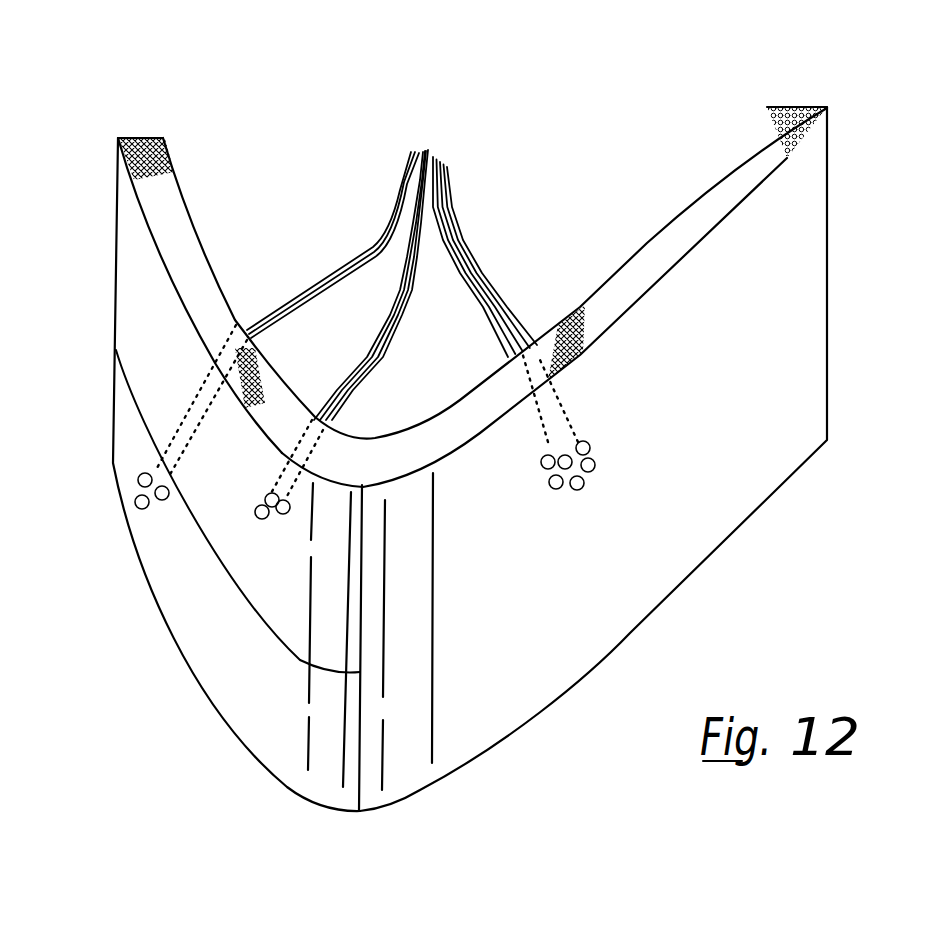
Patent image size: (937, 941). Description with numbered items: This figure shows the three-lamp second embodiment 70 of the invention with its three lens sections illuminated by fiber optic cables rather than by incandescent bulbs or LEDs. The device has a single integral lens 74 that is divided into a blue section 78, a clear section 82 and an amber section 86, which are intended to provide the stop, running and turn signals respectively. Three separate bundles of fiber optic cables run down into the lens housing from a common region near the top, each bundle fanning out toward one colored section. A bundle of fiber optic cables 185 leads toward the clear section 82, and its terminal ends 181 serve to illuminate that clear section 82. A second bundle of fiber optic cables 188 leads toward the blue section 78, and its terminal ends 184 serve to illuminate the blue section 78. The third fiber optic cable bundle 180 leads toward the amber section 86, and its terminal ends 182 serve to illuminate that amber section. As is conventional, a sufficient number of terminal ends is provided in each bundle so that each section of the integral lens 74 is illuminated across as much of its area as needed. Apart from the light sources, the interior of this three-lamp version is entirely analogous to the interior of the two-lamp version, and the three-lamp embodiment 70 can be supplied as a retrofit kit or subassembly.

The second embodiment 70 is at (272, 92).
The integral lens 74 is at (493, 214).
The blue section 78 is at (133, 267).
The clear section 82 is at (180, 608).
The amber section 86 is at (593, 570).
The fiber optic cable bundle 180 is at (497, 293).
The terminal ends 181 is at (137, 480).
The terminal ends 182 is at (587, 443).
The terminal ends 184 is at (290, 508).
The bundle of fiber optic cables 185 is at (372, 249).
The bundle of fiber optic cables 188 is at (373, 355).